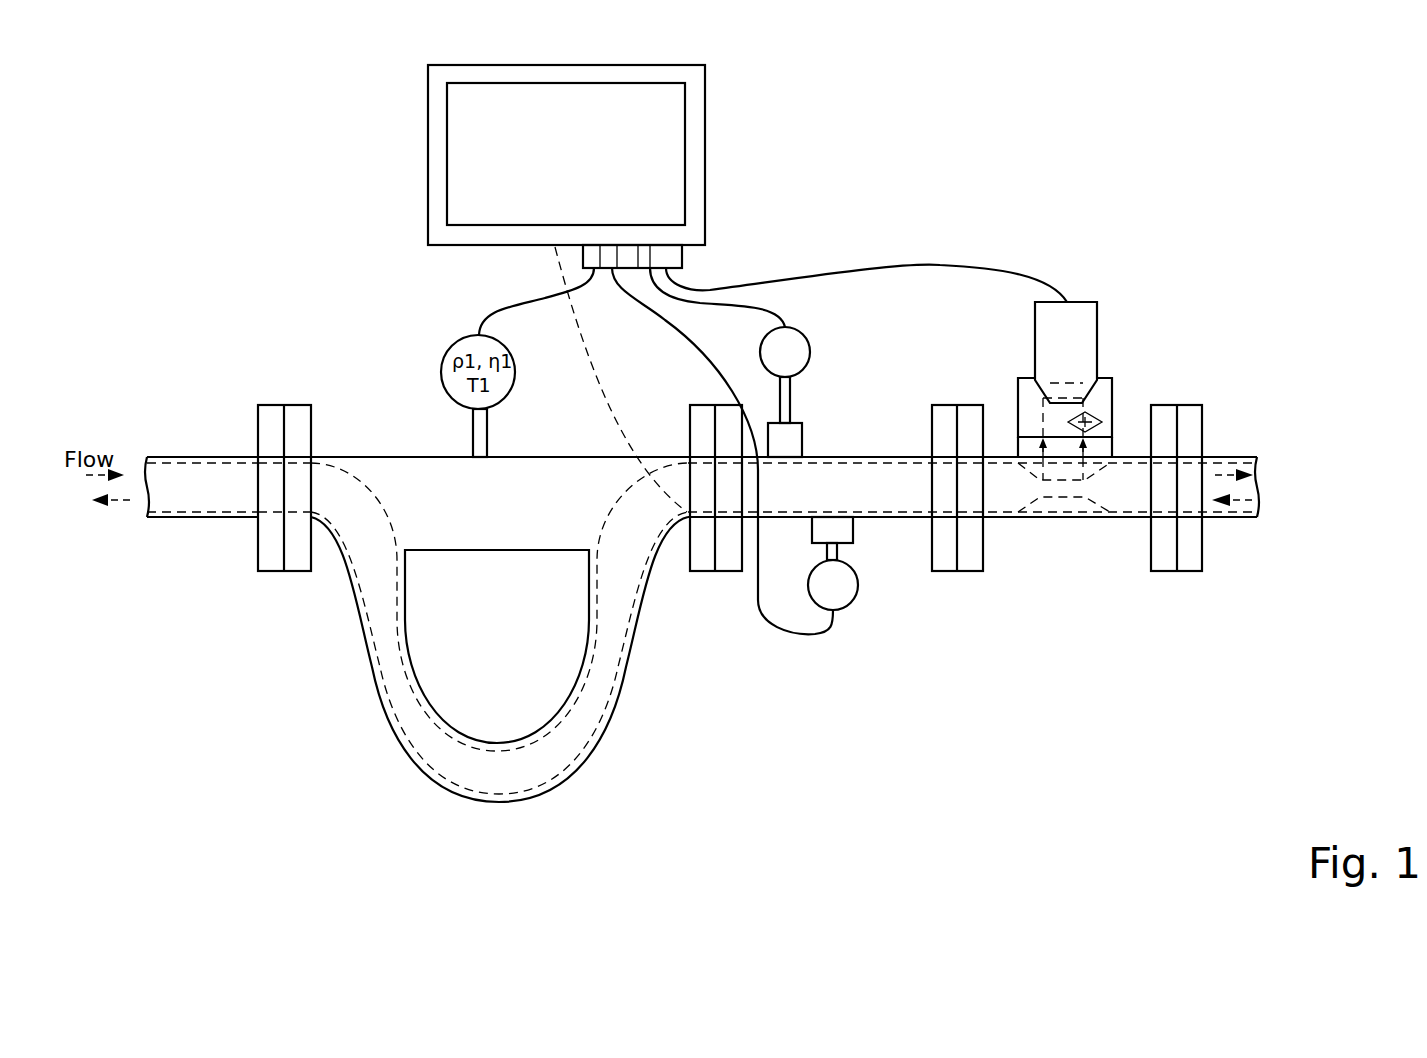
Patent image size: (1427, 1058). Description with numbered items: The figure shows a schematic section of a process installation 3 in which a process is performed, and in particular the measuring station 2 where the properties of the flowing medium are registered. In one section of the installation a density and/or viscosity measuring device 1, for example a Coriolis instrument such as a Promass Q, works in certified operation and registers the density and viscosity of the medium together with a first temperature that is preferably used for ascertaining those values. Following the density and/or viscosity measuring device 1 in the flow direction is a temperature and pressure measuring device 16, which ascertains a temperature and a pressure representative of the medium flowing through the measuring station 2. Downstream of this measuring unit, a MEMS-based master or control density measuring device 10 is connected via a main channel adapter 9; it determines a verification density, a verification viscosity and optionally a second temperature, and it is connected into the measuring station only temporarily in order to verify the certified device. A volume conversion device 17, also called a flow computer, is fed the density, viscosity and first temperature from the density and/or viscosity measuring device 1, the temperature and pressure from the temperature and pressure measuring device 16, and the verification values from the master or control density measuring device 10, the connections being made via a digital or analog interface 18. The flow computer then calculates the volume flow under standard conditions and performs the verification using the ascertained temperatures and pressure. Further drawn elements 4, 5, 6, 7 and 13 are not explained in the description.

The density and/or viscosity measuring device 1 is at (688, 817).
The measuring station 2 is at (1205, 897).
The process installation 3 is at (1112, 205).
The pipeline 4 is at (203, 457).
The pipe wall 5 is at (198, 503).
The flow constriction 6 is at (1058, 518).
The pipe section 7 is at (1108, 530).
The main channel adapter 9 is at (1018, 446).
The MEMS-based master or control density measuring device 10 is at (1097, 308).
The sensor housing 13 is at (1112, 386).
The temperature and pressure measuring device 16 is at (985, 817).
The volume conversion device 17 is at (705, 103).
The digital or analog interface 18 is at (752, 288).